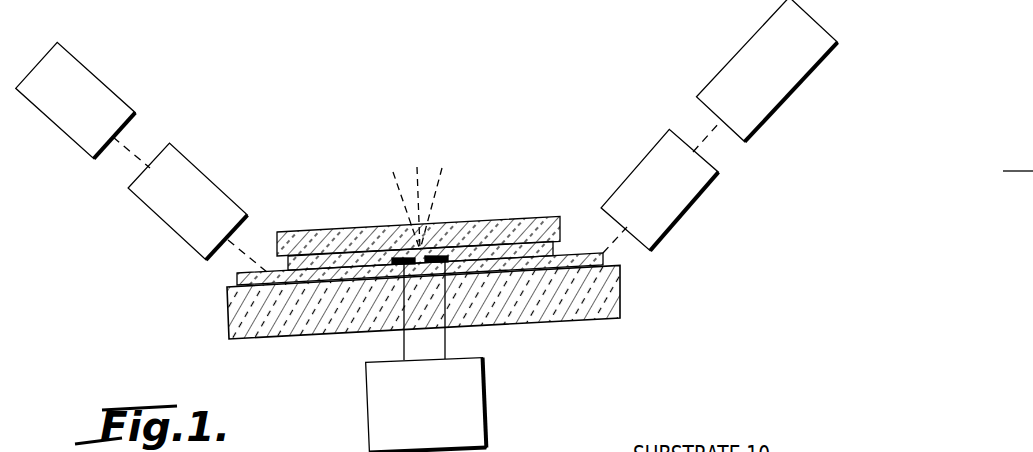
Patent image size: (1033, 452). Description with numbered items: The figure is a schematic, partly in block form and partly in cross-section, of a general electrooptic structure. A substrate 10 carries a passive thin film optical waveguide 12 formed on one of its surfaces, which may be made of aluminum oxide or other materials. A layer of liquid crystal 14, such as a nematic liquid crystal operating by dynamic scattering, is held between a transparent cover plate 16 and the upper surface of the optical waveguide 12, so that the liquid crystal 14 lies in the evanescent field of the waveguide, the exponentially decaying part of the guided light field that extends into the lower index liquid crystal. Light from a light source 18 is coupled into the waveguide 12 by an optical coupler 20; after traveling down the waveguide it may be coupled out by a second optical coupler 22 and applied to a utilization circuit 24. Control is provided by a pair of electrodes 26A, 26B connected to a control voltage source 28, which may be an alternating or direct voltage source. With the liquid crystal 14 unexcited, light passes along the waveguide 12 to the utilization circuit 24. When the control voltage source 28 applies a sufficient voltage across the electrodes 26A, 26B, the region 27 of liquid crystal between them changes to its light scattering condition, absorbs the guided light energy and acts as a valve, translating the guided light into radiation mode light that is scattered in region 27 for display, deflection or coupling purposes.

The substrate 10 is at (596, 318).
The passive thin film optical waveguide 12 is at (605, 256).
The liquid crystal 14 is at (555, 249).
The cover plate 16 is at (317, 232).
The light source 18 is at (102, 80).
The optical coupler 20 is at (157, 218).
The optical coupler 22 is at (698, 195).
The utilization circuit 24 is at (762, 122).
The electrode 26A is at (393, 266).
The electrode 26B is at (449, 258).
The region of the liquid crystal 27 is at (413, 247).
The control voltage source 28 is at (364, 380).